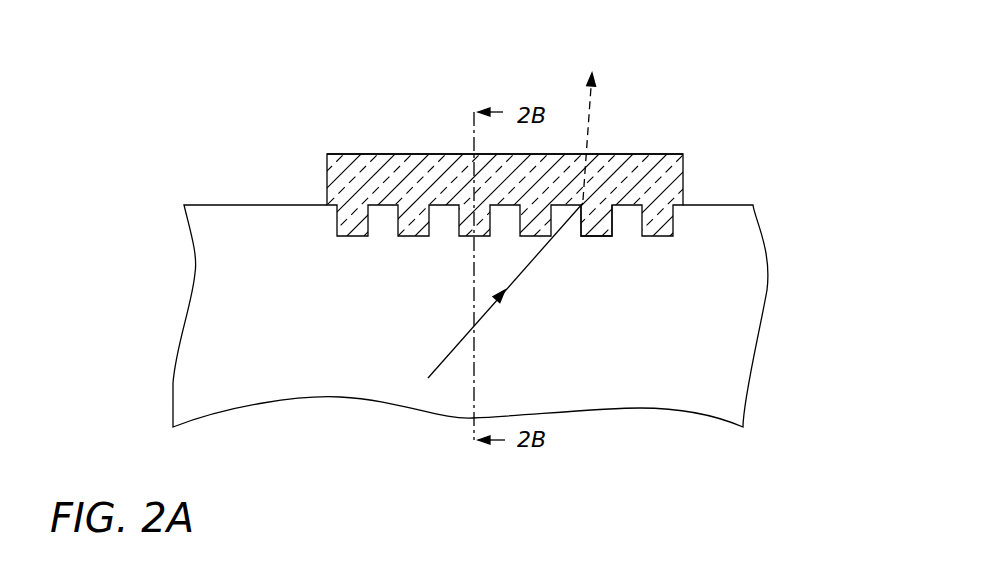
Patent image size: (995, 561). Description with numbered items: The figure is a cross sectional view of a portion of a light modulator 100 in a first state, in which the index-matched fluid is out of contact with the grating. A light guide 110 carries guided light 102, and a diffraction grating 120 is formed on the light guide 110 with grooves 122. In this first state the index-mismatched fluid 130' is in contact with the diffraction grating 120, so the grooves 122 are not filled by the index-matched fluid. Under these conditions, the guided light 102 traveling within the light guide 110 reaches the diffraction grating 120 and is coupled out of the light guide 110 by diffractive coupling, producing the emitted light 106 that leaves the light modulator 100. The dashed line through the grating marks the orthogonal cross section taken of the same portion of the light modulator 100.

The light modulator 100 is at (745, 81).
The guided light 102 is at (451, 325).
The emitted light 106 is at (600, 122).
The light guide 110 is at (581, 322).
The diffraction grating 120 is at (667, 191).
The grooves 122 is at (602, 235).
The index-mismatched fluid 130' is at (489, 134).